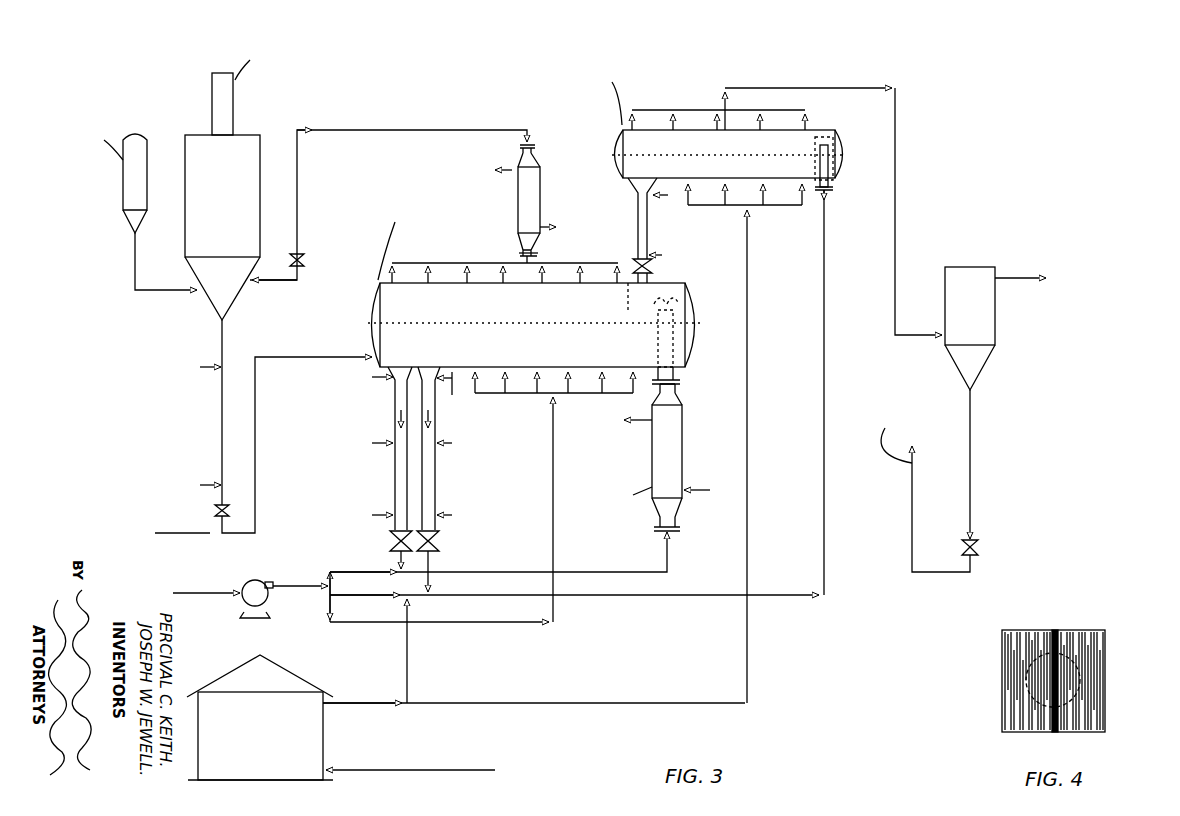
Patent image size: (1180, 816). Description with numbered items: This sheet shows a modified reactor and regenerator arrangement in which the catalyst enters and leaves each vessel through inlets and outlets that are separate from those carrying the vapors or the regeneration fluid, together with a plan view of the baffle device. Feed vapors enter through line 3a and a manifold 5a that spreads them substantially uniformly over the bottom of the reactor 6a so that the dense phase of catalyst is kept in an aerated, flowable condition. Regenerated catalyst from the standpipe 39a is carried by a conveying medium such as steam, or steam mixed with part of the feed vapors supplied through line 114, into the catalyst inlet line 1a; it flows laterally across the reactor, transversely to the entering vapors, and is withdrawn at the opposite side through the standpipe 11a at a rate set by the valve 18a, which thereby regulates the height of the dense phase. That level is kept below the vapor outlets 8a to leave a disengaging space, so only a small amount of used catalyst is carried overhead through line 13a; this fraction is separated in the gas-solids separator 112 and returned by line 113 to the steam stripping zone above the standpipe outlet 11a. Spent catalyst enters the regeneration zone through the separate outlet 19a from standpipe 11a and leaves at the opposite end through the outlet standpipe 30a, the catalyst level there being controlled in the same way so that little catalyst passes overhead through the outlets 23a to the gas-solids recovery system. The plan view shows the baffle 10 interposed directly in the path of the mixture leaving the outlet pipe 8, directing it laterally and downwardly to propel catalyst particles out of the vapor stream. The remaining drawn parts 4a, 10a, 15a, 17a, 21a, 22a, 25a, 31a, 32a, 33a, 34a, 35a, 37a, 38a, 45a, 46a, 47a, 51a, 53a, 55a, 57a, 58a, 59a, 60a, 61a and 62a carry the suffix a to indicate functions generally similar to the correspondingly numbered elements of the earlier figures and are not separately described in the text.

In FIG. 3, the catalyst inlet line 1a is at (825, 250).
In FIG. 3, the feed line 3a is at (748, 310).
In FIG. 3, the oil feed tank 4a is at (292, 680).
In FIG. 3, the manifold 5a is at (770, 206).
In FIG. 3, the reactor 6a is at (822, 137).
In FIG. 3, the vapor outlets 8a is at (647, 110).
In FIG. 3, the cyclone dip leg 10a is at (833, 145).
In FIG. 3, the standpipe 11a is at (638, 213).
In FIG. 3, the line 13a is at (896, 125).
In FIG. 3, the stripping steam inlet 15a is at (660, 197).
In FIG. 3, the aerating gas inlet 17a is at (658, 257).
In FIG. 3, the valve 18a is at (652, 268).
In FIG. 3, the outlet 19a is at (662, 282).
In FIG. 3, the regenerator 21a is at (380, 300).
In FIG. 3, the catalyst recycle cooler 22a is at (676, 458).
In FIG. 3, the outlets 23a is at (410, 265).
In FIG. 3, the regenerator flue gas outlet 25a is at (538, 258).
In FIG. 3, the outlet standpipe 30a is at (395, 485).
In FIG. 3, the regenerated catalyst standpipe 31a is at (436, 482).
In FIG. 3, the aerating gas inlets 32a is at (380, 377).
In FIG. 3, the aerating gas inlets 33a is at (445, 392).
In FIG. 3, the standpipe control valve 34a is at (390, 546).
In FIG. 3, the catalyst recycle line 35a is at (667, 566).
In FIG. 3, the cooling fluid inlet 37a is at (697, 492).
In FIG. 3, the cooling fluid outlet 38a is at (632, 421).
In FIG. 3, the standpipe 39a is at (439, 541).
In FIG. 3, the flue gas cyclone separator 45a is at (540, 192).
In FIG. 3, the flue gas line 46a is at (393, 130).
In FIG. 3, the flue gas outlet 47a is at (503, 172).
In FIG. 3, the catalyst return line to regenerator 51a is at (255, 462).
In FIG. 3, the flue gas cyclone hopper 53a is at (245, 140).
In FIG. 3, the flue gas stack 55a is at (233, 90).
In FIG. 3, the make-up catalyst hopper 57a is at (147, 140).
In FIG. 3, the make-up catalyst line 58a is at (143, 292).
In FIG. 3, the catalyst standpipe 59a is at (222, 343).
In FIG. 3, the aerating gas inlets 60a is at (212, 368).
In FIG. 3, the control valve 61a is at (216, 511).
In FIG. 3, the steam line 62a is at (166, 536).
In FIG. 3, the gas-solids separator 112 is at (963, 265).
In FIG. 3, the line 113 is at (912, 497).
In FIG. 3, the line 114 is at (407, 660).
In FIG. 4, the baffle 10 is at (1105, 634).
In FIG. 4, the outlet pipe 8 is at (1078, 672).